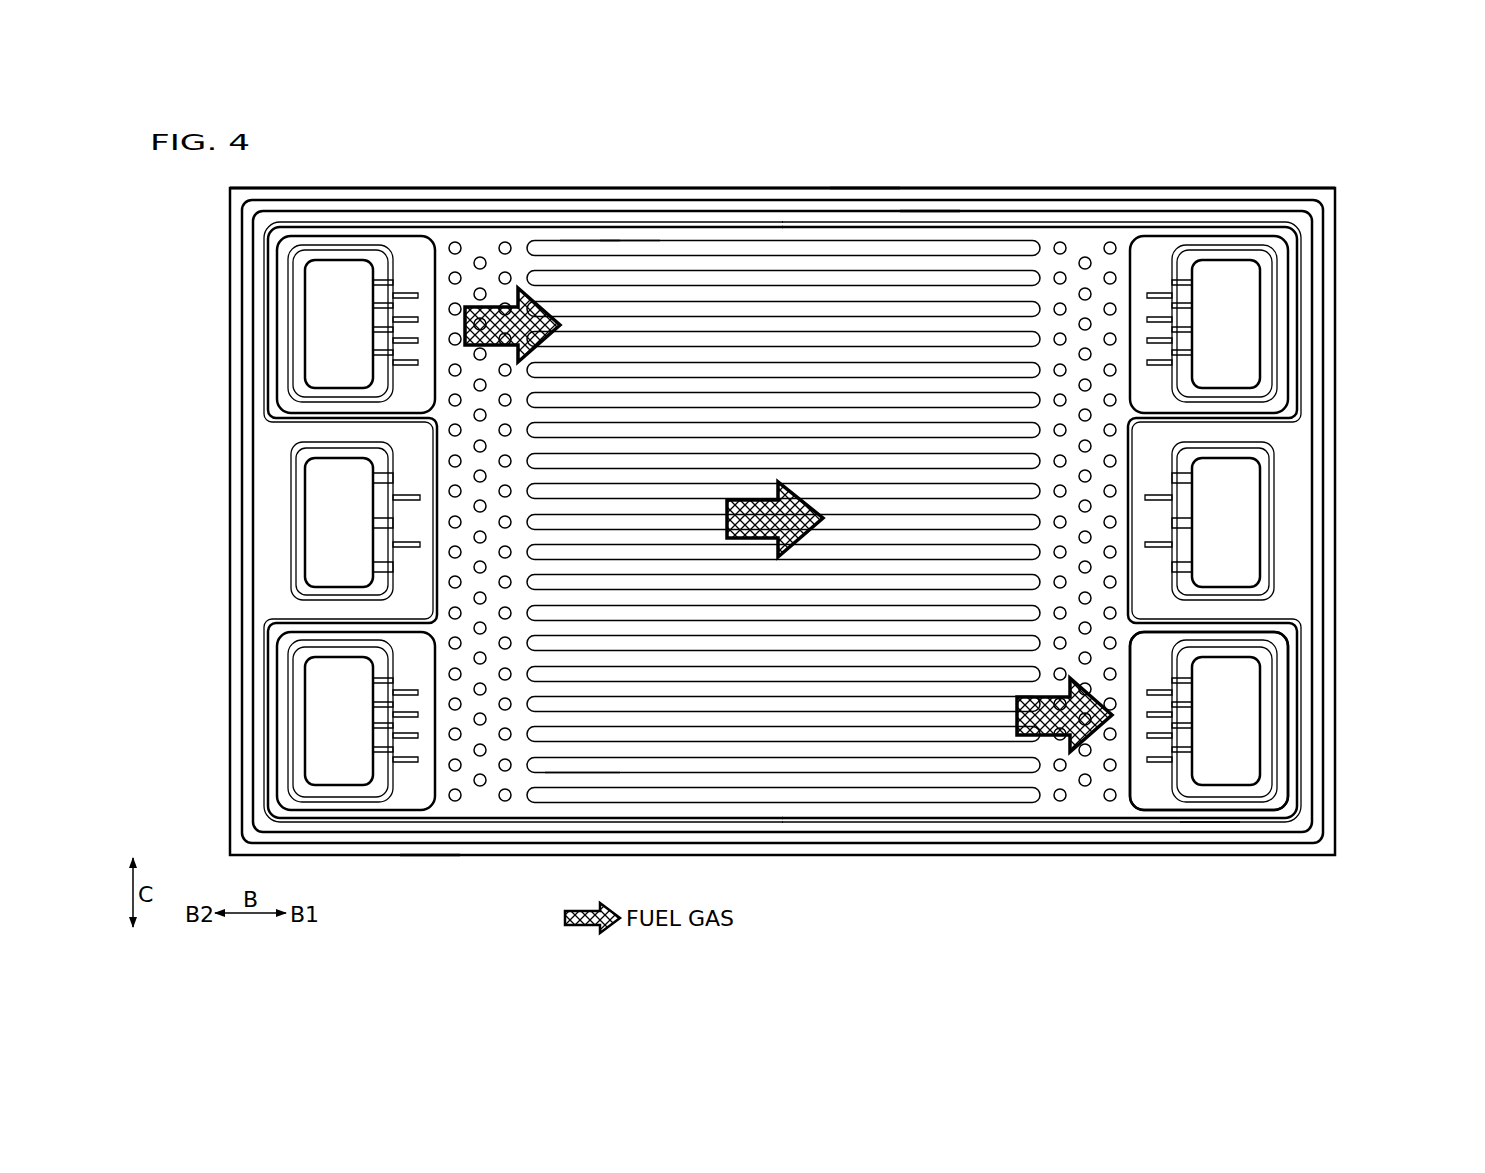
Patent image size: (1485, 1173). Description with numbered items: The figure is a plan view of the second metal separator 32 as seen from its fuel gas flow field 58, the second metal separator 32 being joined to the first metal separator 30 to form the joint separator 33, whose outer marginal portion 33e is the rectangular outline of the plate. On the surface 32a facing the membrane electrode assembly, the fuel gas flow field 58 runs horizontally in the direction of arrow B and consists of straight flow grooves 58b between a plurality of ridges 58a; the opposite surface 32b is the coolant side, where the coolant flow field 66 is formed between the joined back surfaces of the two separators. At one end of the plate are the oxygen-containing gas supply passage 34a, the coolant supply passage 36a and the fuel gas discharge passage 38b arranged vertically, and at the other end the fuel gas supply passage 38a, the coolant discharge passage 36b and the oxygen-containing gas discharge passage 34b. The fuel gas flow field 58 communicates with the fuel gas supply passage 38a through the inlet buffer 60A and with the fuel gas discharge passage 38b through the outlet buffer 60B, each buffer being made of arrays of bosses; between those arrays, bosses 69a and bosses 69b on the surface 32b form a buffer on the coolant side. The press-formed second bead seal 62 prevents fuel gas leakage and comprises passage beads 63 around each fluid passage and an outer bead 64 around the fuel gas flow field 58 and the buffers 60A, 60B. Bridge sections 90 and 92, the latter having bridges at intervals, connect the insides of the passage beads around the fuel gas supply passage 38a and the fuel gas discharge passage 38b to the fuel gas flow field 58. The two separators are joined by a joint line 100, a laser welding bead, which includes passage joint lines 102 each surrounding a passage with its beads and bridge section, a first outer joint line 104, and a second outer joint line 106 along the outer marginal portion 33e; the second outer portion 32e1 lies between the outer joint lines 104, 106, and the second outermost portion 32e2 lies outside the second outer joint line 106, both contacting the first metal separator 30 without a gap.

The first metal separator 30 is at (377, 185).
The second metal separator 32 is at (313, 185).
The joint separator 33 is at (198, 189).
The surface 32a is at (588, 236).
The surface 32b is at (627, 236).
The second outer portion 32e1 is at (931, 210).
The second outermost portion 32e2 is at (862, 189).
The outer marginal portion 33e is at (430, 853).
The oxygen-containing gas supply passage 34a is at (1240, 312).
The oxygen-containing gas discharge passage 34b is at (325, 697).
The coolant supply passage 36a is at (1240, 551).
The coolant discharge passage 36b is at (325, 553).
The fuel gas supply passage 38a is at (323, 282).
The fuel gas discharge passage 38b is at (1240, 738).
The fuel gas flow field 58 is at (783, 458).
The ridges 58a is at (727, 279).
The straight flow grooves 58b is at (797, 262).
The inlet buffer 60A is at (450, 580).
The outlet buffer 60B is at (1115, 580).
The second bead seal 62 is at (1240, 783).
The passage beads 63 is at (290, 303).
The outer bead 64 is at (1210, 860).
The coolant flow field 66 is at (578, 772).
The bosses 69a is at (481, 257).
The bosses 69b is at (1086, 258).
The bridge section 90 is at (414, 254).
The bridge section 92 is at (1157, 781).
The joint line 100 is at (785, 478).
The passage joint line 102 is at (1283, 236).
The first outer joint line 104 is at (1225, 211).
The second outer joint line 106 is at (1182, 199).